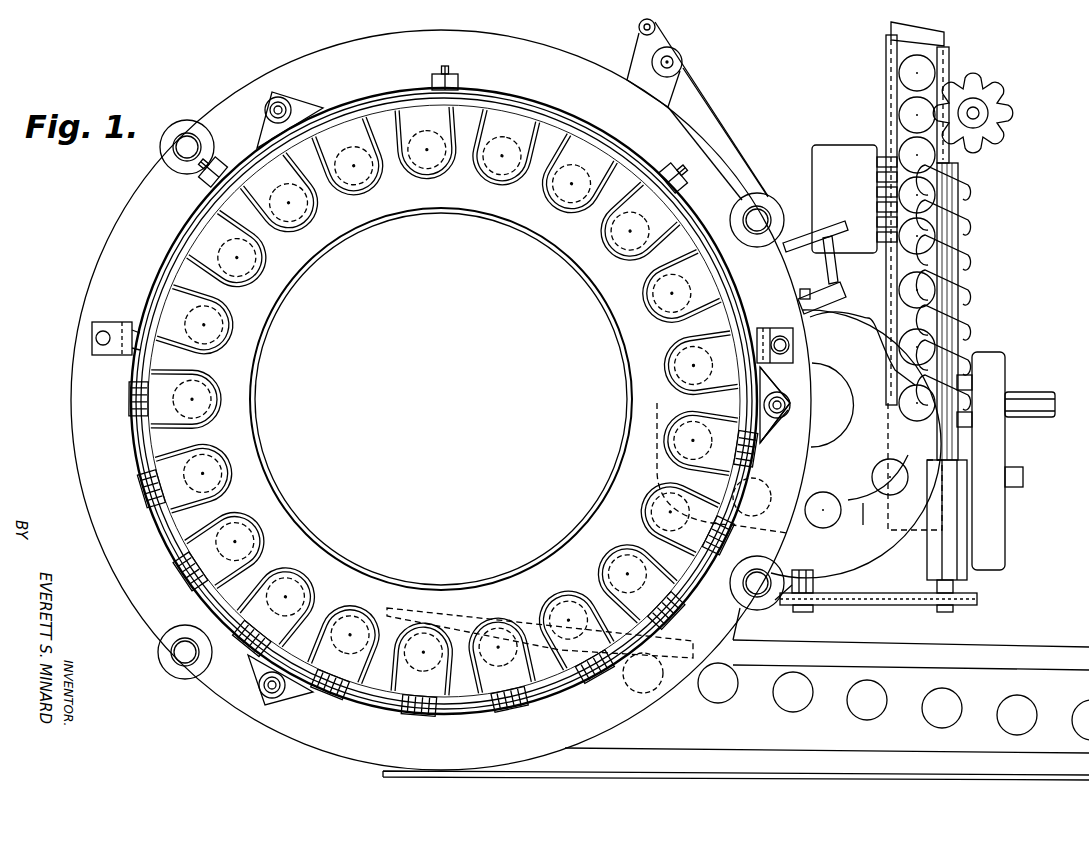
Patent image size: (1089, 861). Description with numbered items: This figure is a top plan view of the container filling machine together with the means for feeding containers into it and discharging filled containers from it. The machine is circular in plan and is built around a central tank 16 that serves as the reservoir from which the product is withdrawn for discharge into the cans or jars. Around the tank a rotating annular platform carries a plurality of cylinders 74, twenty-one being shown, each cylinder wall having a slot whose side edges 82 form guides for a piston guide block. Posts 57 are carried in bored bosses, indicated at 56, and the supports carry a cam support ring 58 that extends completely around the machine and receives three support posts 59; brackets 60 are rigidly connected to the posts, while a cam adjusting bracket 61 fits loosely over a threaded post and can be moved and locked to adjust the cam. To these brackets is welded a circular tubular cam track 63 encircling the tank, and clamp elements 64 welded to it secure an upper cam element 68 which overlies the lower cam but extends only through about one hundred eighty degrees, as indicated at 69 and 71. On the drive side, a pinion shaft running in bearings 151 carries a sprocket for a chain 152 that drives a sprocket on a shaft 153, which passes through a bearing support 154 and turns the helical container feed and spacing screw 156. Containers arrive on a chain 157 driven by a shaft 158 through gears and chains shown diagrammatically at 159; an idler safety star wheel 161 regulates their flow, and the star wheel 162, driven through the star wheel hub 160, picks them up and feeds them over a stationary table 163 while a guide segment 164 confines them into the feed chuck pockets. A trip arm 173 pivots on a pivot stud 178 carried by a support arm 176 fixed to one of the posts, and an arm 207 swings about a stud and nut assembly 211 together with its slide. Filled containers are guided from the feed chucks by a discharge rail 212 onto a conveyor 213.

The tank 16 is at (441, 399).
The bored bosses 56 is at (162, 134).
The posts 57 is at (187, 147).
The cam support ring 58 is at (112, 262).
The support posts 59 is at (280, 102).
The brackets 60 is at (258, 118).
The cam adjusting bracket 61 is at (781, 416).
The cam track 63 is at (470, 716).
The clamp elements 64 is at (118, 355).
The upper cam element 68 is at (182, 238).
The end of upper cam element 69 is at (786, 431).
The end of upper cam element 71 is at (130, 405).
The cylinders 74 is at (345, 615).
The side edges 82 is at (398, 705).
The bearings 151 is at (815, 585).
The chain 152 is at (875, 595).
The shaft 153 is at (955, 588).
The bearing support 154 is at (985, 572).
The helical container feed and spacing screw 156 is at (960, 283).
The chain 157 is at (925, 52).
The shaft 158 is at (1030, 392).
The gears and chains 159 is at (1013, 443).
The star wheel hub 160 is at (822, 422).
The idler safety star wheel 161 is at (985, 140).
The star wheel 162 is at (883, 153).
The stationary table 163 is at (892, 560).
The guide segment 164 is at (888, 538).
The trip arm 173 is at (632, 53).
The support arm 176 is at (700, 97).
The pivot stud 178 is at (657, 27).
The arm 207 is at (690, 118).
The stud and nut assembly 211 is at (676, 62).
The discharge rail 212 is at (457, 615).
The conveyor 213 is at (736, 710).